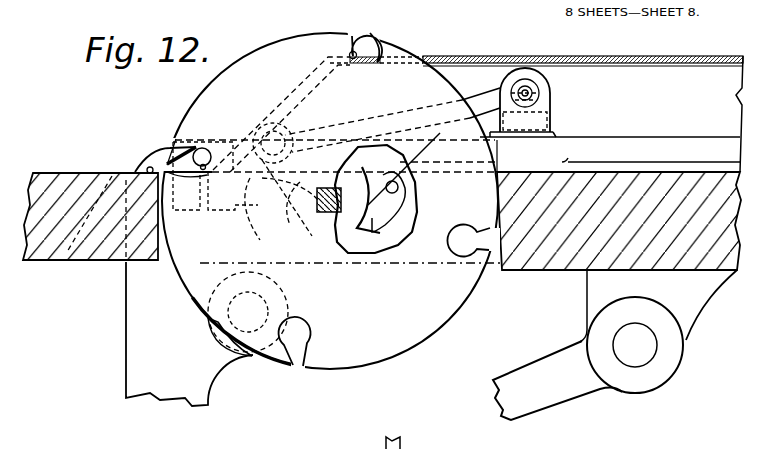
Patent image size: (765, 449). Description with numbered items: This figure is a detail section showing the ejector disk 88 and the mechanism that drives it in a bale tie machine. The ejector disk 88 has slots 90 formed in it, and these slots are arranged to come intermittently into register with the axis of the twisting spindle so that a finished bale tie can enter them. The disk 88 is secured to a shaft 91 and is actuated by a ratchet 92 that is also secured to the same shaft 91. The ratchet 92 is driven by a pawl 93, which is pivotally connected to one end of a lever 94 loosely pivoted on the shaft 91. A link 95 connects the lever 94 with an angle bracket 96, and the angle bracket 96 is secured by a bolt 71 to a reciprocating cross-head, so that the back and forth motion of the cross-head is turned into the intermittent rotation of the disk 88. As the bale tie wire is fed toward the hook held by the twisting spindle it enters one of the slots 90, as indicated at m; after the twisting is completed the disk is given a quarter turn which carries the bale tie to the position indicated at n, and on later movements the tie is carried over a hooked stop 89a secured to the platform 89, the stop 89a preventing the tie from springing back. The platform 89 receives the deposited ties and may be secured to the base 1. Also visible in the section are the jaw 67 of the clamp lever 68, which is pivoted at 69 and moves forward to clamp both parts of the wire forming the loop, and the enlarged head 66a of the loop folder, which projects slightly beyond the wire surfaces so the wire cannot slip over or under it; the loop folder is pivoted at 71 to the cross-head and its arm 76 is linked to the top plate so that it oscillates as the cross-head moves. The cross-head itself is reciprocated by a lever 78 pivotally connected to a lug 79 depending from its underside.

The base 1 is at (557, 268).
The enlarged head 66a is at (276, 216).
The jaw 67 is at (176, 140).
The clamp lever 68 is at (140, 308).
The pivot 69 is at (230, 325).
The bolt 71 is at (545, 118).
The arm 76 is at (647, 147).
The lever 78 is at (557, 380).
The lug 79 is at (688, 305).
The ejector disk 88 is at (268, 41).
The platform 89 is at (562, 56).
The hooked stop 89a is at (405, 50).
The slots 90 is at (190, 147).
The shaft 91 is at (330, 213).
The ratchet 92 is at (372, 202).
The pawl 93 is at (399, 189).
The lever 94 is at (337, 160).
The link 95 is at (392, 120).
The angle bracket 96 is at (551, 100).
The position of bale tie wire in slot m is at (202, 148).
The position of bale tie after quarter turn n is at (355, 51).